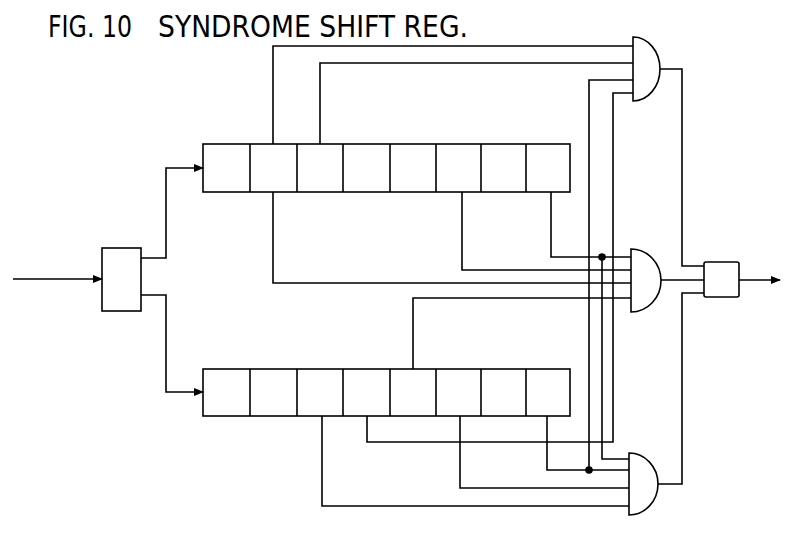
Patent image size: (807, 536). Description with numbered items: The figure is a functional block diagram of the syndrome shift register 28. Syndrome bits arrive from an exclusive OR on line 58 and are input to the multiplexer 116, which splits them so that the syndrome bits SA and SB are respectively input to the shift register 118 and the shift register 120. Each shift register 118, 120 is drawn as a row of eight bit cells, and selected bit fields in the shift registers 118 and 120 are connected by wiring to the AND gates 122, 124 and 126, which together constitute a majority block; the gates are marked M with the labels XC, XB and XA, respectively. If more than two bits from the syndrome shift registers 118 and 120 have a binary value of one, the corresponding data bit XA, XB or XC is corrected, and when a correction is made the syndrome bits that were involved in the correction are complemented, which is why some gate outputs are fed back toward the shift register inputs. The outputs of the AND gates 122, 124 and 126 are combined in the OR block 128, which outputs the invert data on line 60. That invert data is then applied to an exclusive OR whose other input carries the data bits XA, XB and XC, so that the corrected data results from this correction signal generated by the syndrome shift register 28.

The syndrome shift register 28 is at (396, 262).
The line 58 is at (27, 281).
The line 60 is at (755, 275).
The multiplexer 116 is at (120, 247).
The shift register 118 is at (398, 193).
The shift register 120 is at (268, 417).
The AND gate 122 is at (661, 54).
The AND gate 124 is at (647, 250).
The AND gate 126 is at (640, 453).
The OR block 128 is at (721, 262).